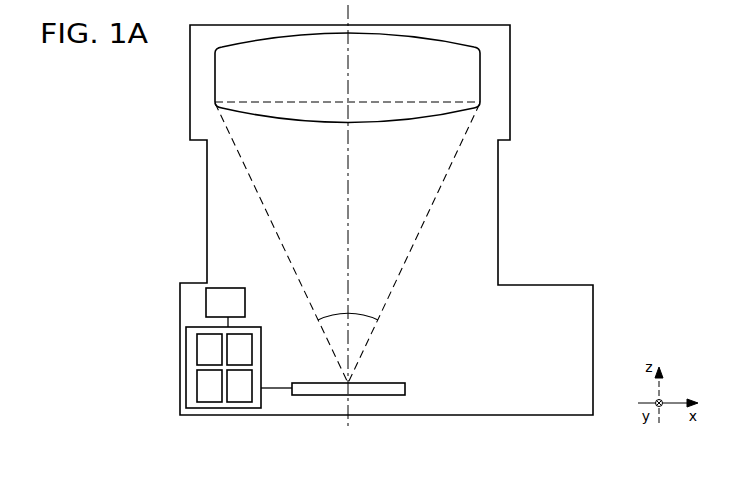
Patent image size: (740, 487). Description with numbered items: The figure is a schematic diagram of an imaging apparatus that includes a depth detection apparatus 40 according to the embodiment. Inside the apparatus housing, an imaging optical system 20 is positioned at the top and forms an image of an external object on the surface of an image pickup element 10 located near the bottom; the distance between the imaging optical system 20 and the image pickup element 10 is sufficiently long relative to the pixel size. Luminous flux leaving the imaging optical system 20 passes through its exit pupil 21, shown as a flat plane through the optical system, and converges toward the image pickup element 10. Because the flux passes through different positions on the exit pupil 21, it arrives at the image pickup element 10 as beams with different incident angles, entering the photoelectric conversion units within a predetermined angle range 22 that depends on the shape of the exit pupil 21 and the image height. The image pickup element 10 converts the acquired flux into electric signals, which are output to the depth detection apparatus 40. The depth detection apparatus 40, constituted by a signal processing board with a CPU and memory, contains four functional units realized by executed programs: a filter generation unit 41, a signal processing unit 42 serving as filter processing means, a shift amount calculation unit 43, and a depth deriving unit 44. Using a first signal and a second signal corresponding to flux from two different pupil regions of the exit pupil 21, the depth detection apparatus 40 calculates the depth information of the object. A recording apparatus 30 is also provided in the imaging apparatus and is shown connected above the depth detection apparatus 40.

The image pickup element 10 is at (405, 395).
The imaging optical system 20 is at (482, 53).
The exit pupil 21 is at (455, 101).
The angle range 22 is at (363, 312).
The recording apparatus 30 is at (230, 297).
The depth detection apparatus 40 is at (211, 384).
The filter generation unit 41 is at (243, 348).
The signal processing unit 42 is at (245, 393).
The shift amount calculation unit 43 is at (200, 357).
The depth deriving unit 44 is at (207, 393).